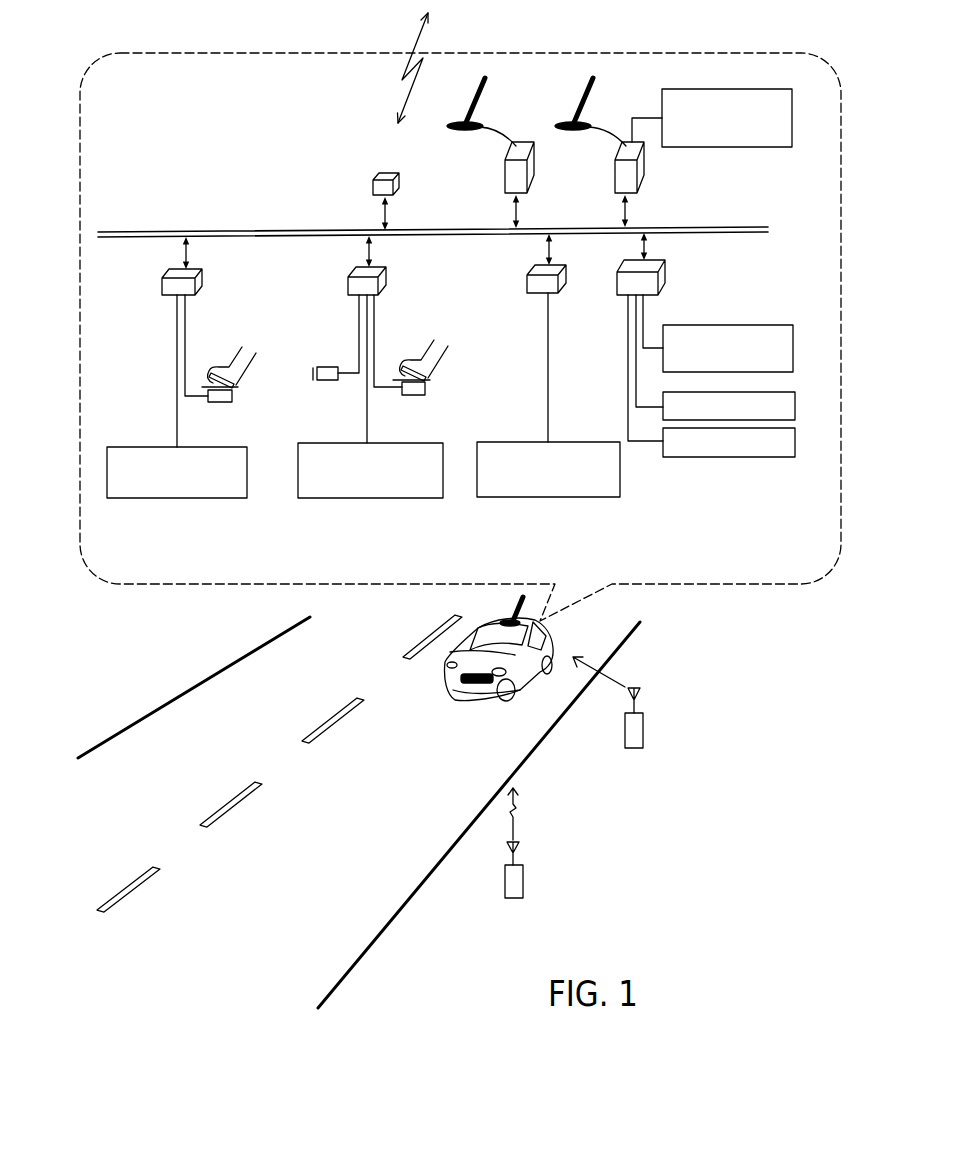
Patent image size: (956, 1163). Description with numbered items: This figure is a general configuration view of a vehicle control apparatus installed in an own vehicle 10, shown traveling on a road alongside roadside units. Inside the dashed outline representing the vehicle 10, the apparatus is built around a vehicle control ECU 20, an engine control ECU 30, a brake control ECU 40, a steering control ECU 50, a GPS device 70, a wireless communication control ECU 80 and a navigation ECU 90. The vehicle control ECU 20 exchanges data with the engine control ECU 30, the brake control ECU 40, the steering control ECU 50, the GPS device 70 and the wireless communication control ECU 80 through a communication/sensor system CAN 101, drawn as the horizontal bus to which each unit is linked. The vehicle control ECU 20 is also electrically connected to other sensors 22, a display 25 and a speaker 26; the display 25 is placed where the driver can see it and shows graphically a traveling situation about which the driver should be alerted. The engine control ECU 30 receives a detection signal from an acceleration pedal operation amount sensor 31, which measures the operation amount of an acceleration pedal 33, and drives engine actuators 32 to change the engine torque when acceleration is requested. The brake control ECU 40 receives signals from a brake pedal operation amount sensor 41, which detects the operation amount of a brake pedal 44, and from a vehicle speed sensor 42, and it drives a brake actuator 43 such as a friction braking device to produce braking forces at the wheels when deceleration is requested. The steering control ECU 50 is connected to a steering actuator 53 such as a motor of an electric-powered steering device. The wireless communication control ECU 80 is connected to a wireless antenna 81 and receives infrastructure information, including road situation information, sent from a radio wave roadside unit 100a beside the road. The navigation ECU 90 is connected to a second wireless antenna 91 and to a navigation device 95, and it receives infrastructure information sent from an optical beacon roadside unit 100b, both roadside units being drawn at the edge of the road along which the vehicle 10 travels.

The vehicle 10 is at (528, 666).
The vehicle control ECU 20 is at (656, 262).
The sensors 22 is at (793, 350).
The display 25 is at (795, 407).
The speaker 26 is at (795, 443).
The engine control ECU 30 is at (194, 271).
The acceleration pedal operation amount sensor 31 is at (221, 402).
The engine actuators 32 is at (165, 498).
The acceleration pedal 33 is at (212, 373).
The brake control ECU 40 is at (379, 270).
The brake pedal operation amount sensor 41 is at (414, 395).
The vehicle speed sensor 42 is at (313, 375).
The brake actuator 43 is at (370, 498).
The brake pedal 44 is at (402, 368).
The steering control ECU 50 is at (558, 267).
The steering actuator 53 is at (568, 497).
The GPS device 70 is at (388, 172).
The wireless communication control ECU 80 is at (527, 163).
The wireless antenna 81 is at (483, 96).
The navigation ECU 90 is at (637, 163).
The wireless antenna 91 is at (592, 96).
The navigation device 95 is at (792, 116).
The communication/sensor system CAN 101 is at (343, 229).
The radio wave roadside unit 100a is at (643, 735).
The optical beacon roadside unit 100b is at (523, 888).